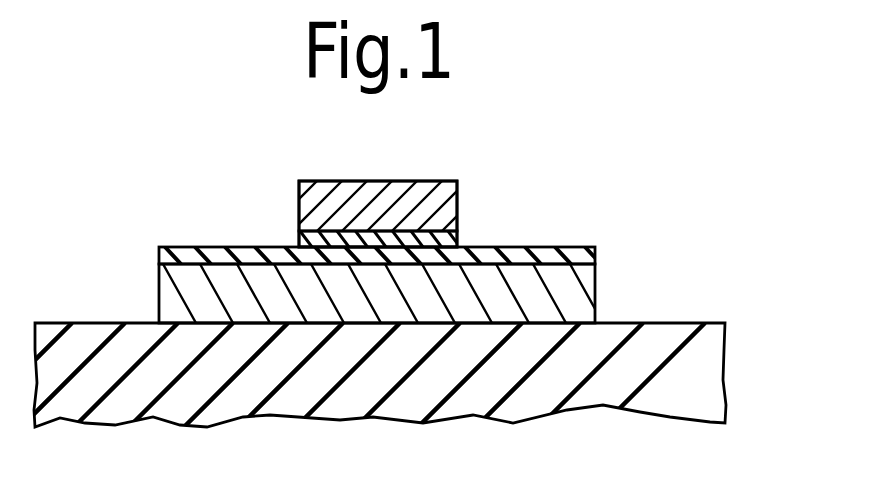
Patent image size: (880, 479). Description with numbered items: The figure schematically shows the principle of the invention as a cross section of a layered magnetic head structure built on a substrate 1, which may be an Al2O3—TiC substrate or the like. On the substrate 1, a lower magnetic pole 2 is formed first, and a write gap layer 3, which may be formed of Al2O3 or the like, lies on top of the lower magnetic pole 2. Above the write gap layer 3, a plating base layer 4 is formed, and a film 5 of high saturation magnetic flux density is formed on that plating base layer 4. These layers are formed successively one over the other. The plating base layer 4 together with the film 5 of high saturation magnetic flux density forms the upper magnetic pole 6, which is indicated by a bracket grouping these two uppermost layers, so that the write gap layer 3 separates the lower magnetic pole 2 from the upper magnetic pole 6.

The substrate 1 is at (702, 358).
The lower magnetic pole 2 is at (577, 287).
The write gap layer 3 is at (592, 255).
The plating base layer 4 is at (458, 237).
The film of high saturation magnetic flux density 5 is at (457, 210).
The upper magnetic pole 6 is at (507, 121).